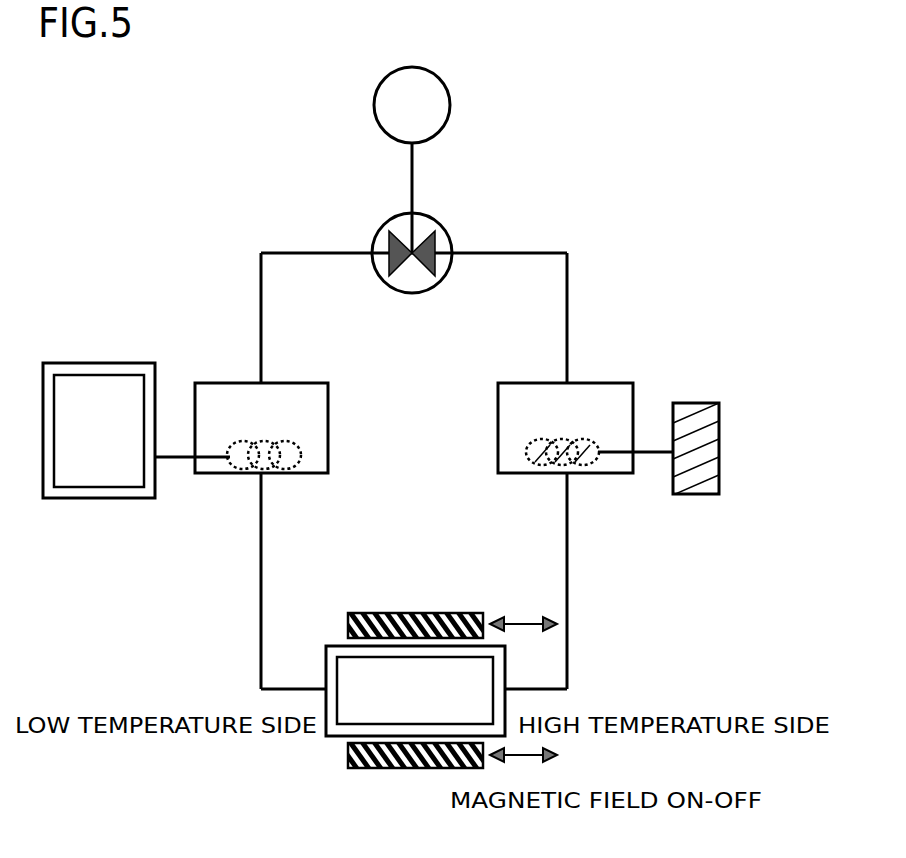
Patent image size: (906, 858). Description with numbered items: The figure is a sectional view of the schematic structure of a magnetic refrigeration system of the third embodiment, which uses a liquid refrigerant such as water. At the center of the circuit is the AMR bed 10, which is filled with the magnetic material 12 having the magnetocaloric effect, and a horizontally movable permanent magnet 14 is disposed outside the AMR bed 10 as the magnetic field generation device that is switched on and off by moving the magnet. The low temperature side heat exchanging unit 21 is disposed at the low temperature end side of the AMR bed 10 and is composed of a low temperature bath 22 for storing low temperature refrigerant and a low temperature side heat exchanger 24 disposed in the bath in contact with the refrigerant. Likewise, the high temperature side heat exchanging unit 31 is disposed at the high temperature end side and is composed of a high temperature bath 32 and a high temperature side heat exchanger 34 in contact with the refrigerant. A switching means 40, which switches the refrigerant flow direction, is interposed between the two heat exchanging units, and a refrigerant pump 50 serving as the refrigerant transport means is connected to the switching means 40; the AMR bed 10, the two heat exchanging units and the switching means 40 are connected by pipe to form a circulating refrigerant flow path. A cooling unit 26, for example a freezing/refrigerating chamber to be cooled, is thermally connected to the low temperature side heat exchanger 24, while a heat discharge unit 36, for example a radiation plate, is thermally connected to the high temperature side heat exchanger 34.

The AMR bed 10 is at (340, 732).
The magnetic material 12 is at (350, 675).
The permanent magnet 14 is at (443, 612).
The low temperature side heat exchanging unit 21 is at (310, 352).
The low temperature bath 22 is at (328, 428).
The low temperature side heat exchanger 24 is at (243, 440).
The cooling unit 26 is at (102, 363).
The high temperature side heat exchanging unit 31 is at (514, 352).
The high temperature bath 32 is at (498, 428).
The high temperature side heat exchanger 34 is at (583, 442).
The heat discharge unit 36 is at (697, 403).
The switching means 40 is at (435, 220).
The refrigerant pump 50 is at (448, 98).